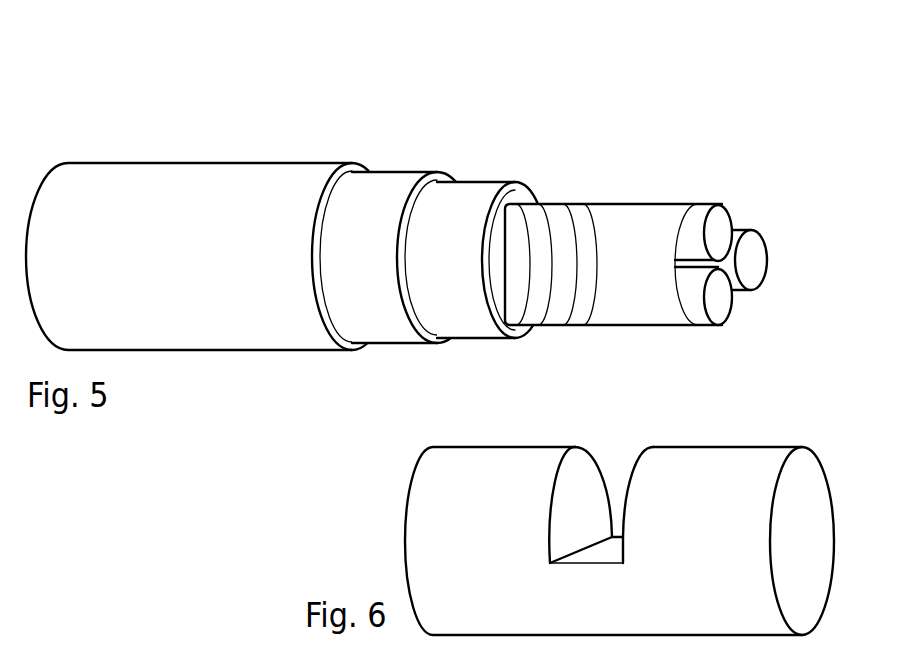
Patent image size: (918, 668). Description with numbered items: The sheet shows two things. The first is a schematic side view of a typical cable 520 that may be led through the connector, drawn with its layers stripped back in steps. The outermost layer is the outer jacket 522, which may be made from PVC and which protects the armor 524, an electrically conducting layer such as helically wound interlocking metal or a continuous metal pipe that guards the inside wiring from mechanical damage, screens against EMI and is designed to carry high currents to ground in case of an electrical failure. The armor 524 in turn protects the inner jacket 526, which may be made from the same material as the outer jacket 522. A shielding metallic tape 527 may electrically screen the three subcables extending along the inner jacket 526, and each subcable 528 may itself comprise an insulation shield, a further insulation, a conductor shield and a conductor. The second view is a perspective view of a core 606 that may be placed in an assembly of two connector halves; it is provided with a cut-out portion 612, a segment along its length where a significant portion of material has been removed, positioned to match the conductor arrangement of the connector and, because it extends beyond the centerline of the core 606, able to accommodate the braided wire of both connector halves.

In FIG. 5, the cable 520 is at (396, 177).
In FIG. 5, the outer jacket 522 is at (262, 172).
In FIG. 5, the armor 524 is at (400, 182).
In FIG. 5, the inner jacket 526 is at (490, 188).
In FIG. 5, the shielding metallic tape 527 is at (593, 222).
In FIG. 5, the subcable 528 is at (697, 230).
In FIG. 6, the core 606 is at (619, 500).
In FIG. 6, the cut-out portion 612 is at (615, 468).